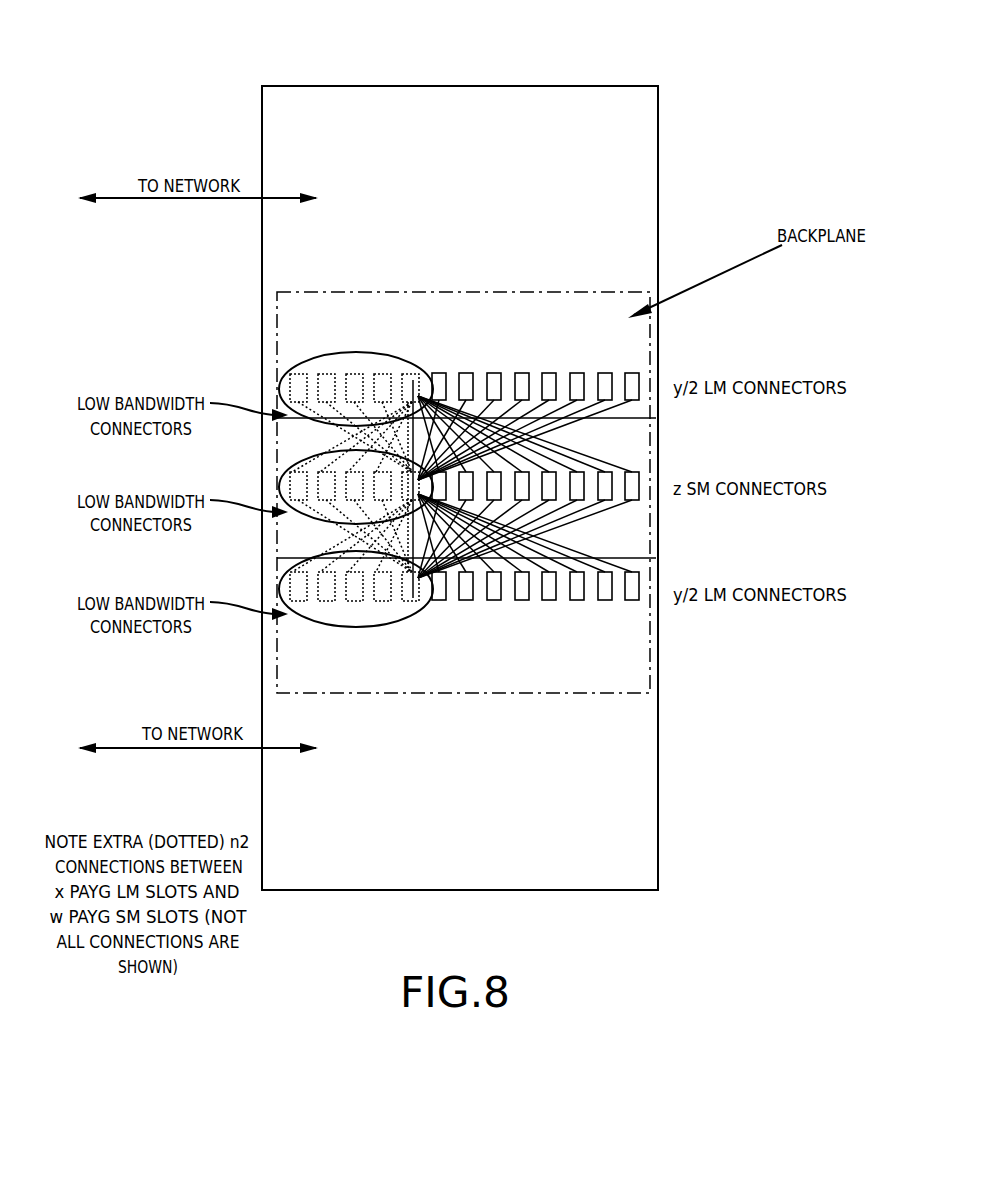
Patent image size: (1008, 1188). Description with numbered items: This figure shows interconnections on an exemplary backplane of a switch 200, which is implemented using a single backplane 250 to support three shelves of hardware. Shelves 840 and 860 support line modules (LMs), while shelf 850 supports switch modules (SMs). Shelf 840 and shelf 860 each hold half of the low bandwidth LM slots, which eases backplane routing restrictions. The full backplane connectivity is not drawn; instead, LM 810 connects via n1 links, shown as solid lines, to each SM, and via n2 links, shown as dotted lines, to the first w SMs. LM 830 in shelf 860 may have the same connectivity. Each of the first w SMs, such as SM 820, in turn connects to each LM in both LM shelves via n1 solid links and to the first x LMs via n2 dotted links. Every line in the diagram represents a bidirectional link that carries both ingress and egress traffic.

The switch 200 is at (746, 39).
The backplane 250 is at (625, 275).
The LM 810 is at (407, 372).
The SM 820 is at (572, 531).
The LM 830 is at (410, 604).
The shelf 840 is at (650, 345).
The shelf 850 is at (652, 460).
The shelf 860 is at (651, 641).